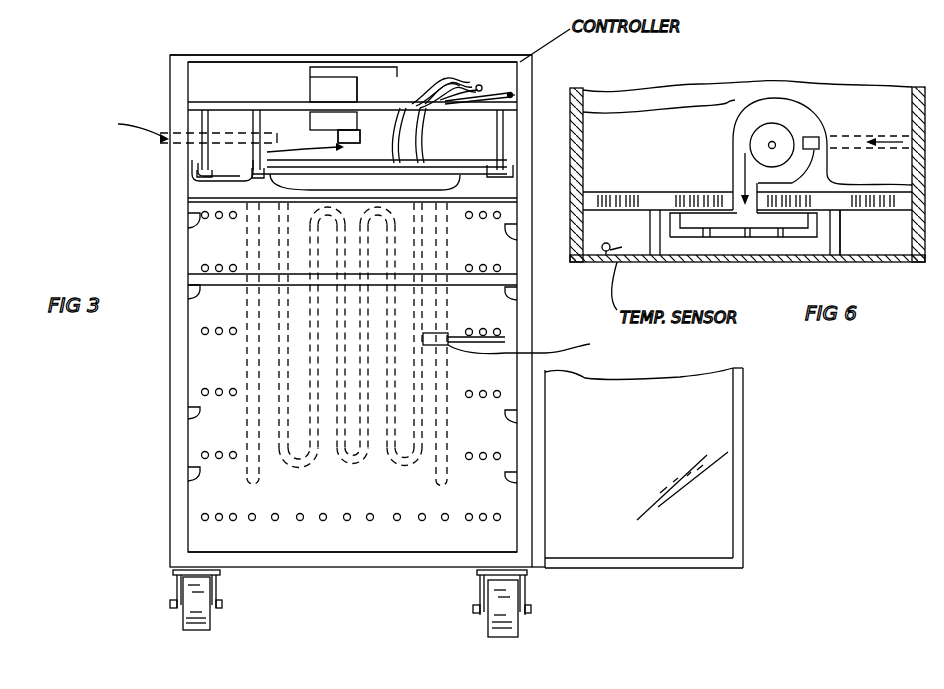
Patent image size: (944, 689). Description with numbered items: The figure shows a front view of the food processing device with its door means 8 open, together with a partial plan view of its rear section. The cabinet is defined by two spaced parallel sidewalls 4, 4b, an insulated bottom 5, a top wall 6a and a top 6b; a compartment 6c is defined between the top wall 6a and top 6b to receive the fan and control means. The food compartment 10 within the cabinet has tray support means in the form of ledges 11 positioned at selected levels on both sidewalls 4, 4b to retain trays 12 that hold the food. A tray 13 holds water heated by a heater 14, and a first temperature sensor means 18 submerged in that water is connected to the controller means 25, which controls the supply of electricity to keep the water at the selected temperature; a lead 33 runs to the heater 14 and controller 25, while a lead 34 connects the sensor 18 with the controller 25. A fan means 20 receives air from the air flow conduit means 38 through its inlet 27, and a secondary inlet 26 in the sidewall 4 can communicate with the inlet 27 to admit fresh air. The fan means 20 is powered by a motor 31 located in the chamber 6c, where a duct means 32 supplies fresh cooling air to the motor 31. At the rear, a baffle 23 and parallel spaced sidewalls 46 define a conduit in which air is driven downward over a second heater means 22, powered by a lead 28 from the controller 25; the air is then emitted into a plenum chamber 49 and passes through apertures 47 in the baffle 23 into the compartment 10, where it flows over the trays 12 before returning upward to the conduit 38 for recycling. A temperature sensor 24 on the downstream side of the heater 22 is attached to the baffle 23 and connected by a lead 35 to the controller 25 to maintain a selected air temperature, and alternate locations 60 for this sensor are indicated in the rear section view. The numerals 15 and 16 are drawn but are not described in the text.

In FIG. 3, the sidewall 4 is at (176, 352).
In FIG. 6, the sidewall 4 is at (911, 104).
In FIG. 3, the sidewall 4b is at (533, 352).
In FIG. 6, the insulated bottom 5 is at (880, 244).
In FIG. 3, the top wall 6a is at (196, 107).
In FIG. 6, the top wall 6a is at (840, 119).
In FIG. 3, the top 6b is at (290, 55).
In FIG. 3, the compartment 6c is at (196, 78).
In FIG. 3, the door means 8 is at (656, 439).
In FIG. 3, the compartment 10 is at (224, 502).
In FIG. 3, the ledges 11 is at (190, 350).
In FIG. 3, the trays 12 is at (216, 277).
In FIG. 3, the tray 13 is at (238, 191).
In FIG. 3, the heater 14 is at (445, 145).
In FIG. 6, the upper chamber 15 is at (612, 184).
In FIG. 3, the support strut 16 is at (209, 123).
In FIG. 3, the first temperature sensor means 18 is at (441, 185).
In FIG. 3, the fan means 20 is at (333, 89).
In FIG. 6, the fan means 20 is at (735, 138).
In FIG. 6, the second heater means 22 is at (745, 238).
In FIG. 3, the baffle 23 is at (347, 353).
In FIG. 6, the baffle 23 is at (680, 178).
In FIG. 3, the temperature sensor 24 is at (428, 333).
In FIG. 3, the controller means 25 is at (513, 84).
In FIG. 3, the secondary inlet 26 is at (291, 129).
In FIG. 6, the secondary inlet 26 is at (810, 150).
In FIG. 3, the inlet 27 is at (349, 143).
In FIG. 6, the inlet 27 is at (775, 141).
In FIG. 3, the lead 28 is at (461, 82).
In FIG. 3, the motor 31 is at (358, 89).
In FIG. 6, the motor 31 is at (753, 118).
In FIG. 3, the duct means 32 is at (310, 70).
In FIG. 3, the lead 33 is at (478, 83).
In FIG. 3, the lead 34 is at (507, 86).
In FIG. 3, the lead 35 is at (443, 86).
In FIG. 3, the air flow conduit means 38 is at (267, 152).
In FIG. 6, the sidewalls 46 is at (652, 236).
In FIG. 3, the apertures 47 is at (220, 396).
In FIG. 6, the plenum chamber 49 is at (622, 247).
In FIG. 6, the alternate locations 60 is at (600, 252).